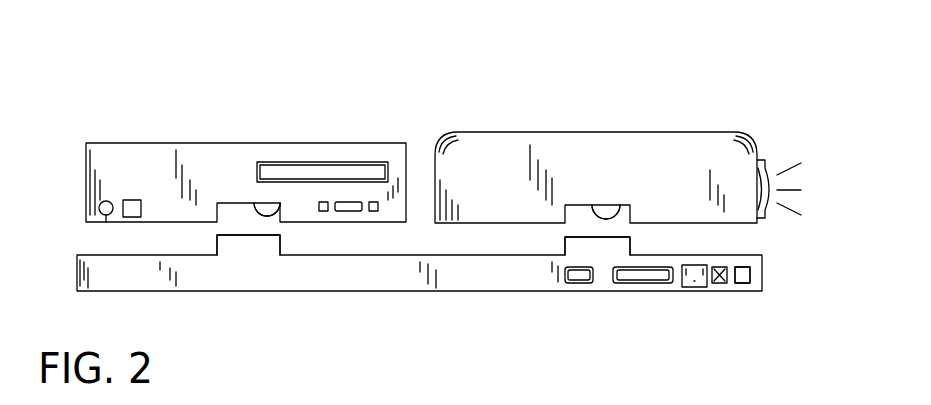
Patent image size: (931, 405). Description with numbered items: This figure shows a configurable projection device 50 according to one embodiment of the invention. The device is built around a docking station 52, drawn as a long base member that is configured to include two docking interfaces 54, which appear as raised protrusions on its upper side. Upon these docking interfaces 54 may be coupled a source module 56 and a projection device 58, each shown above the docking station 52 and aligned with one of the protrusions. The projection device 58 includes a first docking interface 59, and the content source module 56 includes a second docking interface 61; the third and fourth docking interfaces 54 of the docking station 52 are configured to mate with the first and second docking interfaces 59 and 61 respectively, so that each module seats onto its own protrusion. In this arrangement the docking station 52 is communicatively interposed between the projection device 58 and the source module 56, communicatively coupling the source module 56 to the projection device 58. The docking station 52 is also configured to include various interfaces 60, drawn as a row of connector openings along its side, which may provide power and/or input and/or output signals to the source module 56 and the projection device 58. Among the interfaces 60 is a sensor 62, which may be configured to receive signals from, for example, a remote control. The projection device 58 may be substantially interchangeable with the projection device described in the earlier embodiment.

The configurable projection device 50 is at (163, 70).
The docking station 52 is at (372, 282).
The docking interfaces 54 is at (218, 232).
The source module 56 is at (236, 178).
The projection device 58 is at (705, 131).
The first docking interface 59 is at (620, 207).
The interfaces 60 is at (760, 298).
The second docking interface 61 is at (282, 210).
The sensor 62 is at (750, 273).